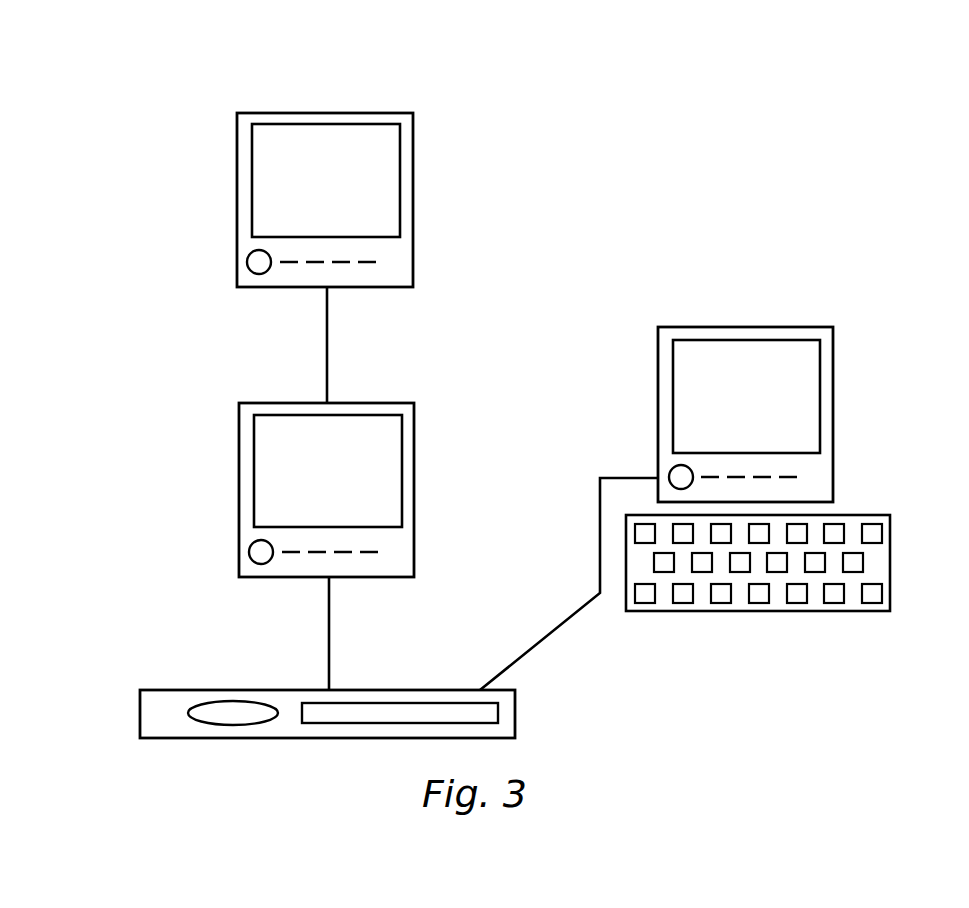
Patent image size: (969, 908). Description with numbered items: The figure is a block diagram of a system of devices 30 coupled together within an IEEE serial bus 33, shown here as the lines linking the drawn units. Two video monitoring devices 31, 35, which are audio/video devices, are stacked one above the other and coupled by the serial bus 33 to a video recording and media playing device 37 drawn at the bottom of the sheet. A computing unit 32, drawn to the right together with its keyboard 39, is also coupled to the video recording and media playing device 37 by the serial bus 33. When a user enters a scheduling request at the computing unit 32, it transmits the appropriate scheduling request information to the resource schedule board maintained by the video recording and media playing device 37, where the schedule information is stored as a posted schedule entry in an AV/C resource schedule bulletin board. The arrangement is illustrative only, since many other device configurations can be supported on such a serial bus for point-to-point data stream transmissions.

The system of devices 30 is at (164, 100).
The video monitoring device 31 is at (413, 171).
The computing unit 32 is at (833, 386).
The IEEE 1394-1995 serial bus 33 is at (328, 345).
The video monitoring device 35 is at (414, 461).
The video recording and media playing device 37 is at (515, 706).
The keyboard 39 is at (742, 612).